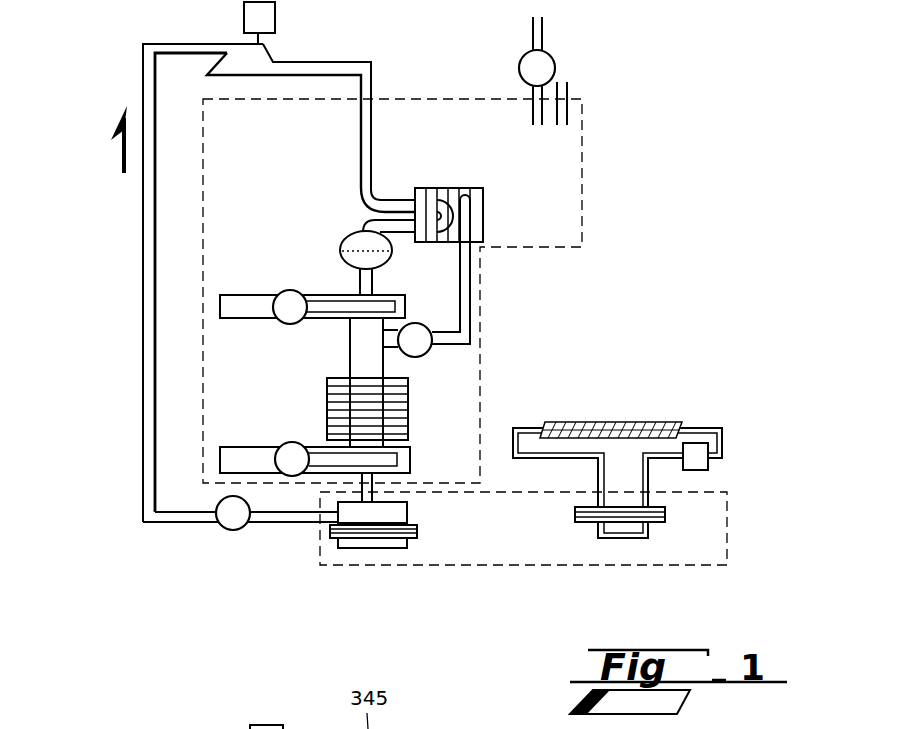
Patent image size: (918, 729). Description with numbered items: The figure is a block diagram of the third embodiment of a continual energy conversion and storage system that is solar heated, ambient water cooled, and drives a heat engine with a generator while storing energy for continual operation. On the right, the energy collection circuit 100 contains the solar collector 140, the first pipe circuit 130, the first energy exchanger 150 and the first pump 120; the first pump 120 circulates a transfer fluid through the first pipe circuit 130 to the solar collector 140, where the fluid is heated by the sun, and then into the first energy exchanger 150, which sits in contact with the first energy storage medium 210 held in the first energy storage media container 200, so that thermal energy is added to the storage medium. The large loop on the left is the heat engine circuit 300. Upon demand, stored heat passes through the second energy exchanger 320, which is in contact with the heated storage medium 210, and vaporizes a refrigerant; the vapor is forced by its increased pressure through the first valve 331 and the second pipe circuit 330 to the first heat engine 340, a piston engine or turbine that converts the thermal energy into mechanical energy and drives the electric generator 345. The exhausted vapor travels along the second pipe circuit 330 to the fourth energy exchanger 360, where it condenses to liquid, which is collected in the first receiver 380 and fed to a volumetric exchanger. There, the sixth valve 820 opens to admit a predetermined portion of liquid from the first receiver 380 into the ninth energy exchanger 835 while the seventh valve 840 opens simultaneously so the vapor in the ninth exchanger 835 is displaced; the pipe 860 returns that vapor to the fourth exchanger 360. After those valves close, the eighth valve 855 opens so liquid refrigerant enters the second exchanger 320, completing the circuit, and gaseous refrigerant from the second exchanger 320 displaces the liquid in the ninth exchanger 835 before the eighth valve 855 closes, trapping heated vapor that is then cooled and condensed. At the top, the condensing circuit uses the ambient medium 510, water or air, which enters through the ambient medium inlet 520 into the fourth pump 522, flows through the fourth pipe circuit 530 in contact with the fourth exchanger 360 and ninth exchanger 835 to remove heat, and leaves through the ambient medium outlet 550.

The energy collection circuit 100 is at (700, 282).
The first pump 120 is at (708, 463).
The first pipe circuit 130 is at (720, 436).
The solar collector 140 is at (612, 424).
The first energy exchanger 150 is at (665, 512).
The first energy storage media container 200 is at (360, 565).
The first energy storage medium 210 is at (512, 530).
The heat engine circuit 300 is at (80, 78).
The second energy exchanger 320 is at (330, 527).
The second pipe circuit 330 is at (143, 268).
The first valve 331 is at (230, 530).
The first heat engine 340 is at (236, 44).
The electric generator 345 is at (276, 10).
The fourth energy exchanger 360 is at (484, 198).
The first receiver 380 is at (340, 256).
The ambient medium 510 is at (520, 168).
The ambient medium inlet 520 is at (533, 33).
The fourth pump 522 is at (556, 62).
The fourth pipe circuit 530 is at (582, 136).
The ambient medium outlet 550 is at (568, 88).
The sixth valve 820 is at (305, 325).
The ninth energy exchanger 835 is at (327, 384).
The seventh valve 840 is at (420, 356).
The eighth valve 855 is at (292, 442).
The pipe 860 is at (472, 292).